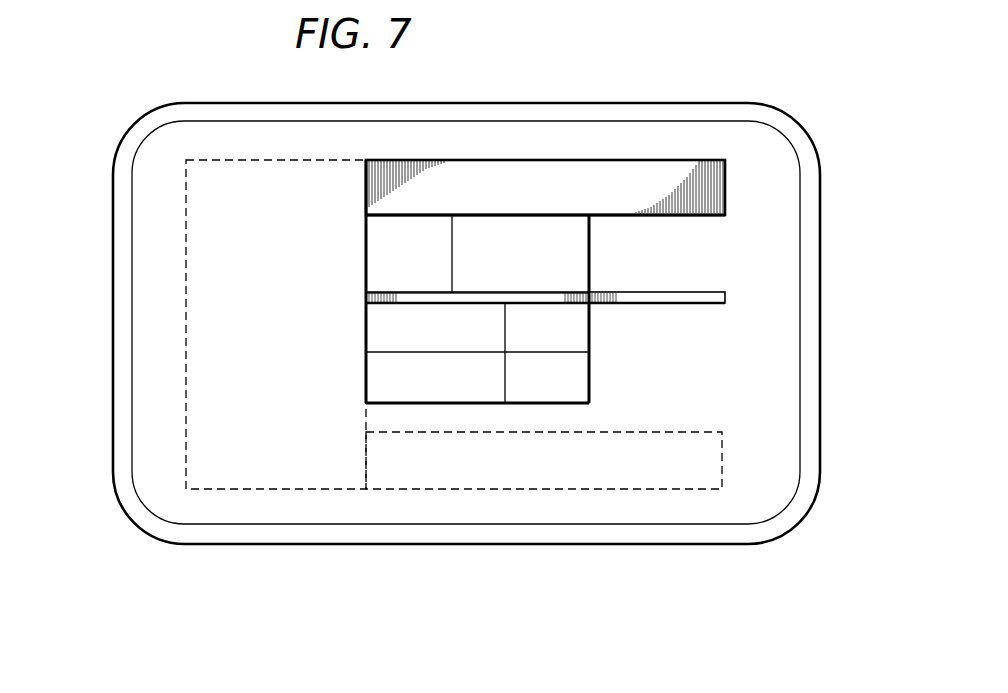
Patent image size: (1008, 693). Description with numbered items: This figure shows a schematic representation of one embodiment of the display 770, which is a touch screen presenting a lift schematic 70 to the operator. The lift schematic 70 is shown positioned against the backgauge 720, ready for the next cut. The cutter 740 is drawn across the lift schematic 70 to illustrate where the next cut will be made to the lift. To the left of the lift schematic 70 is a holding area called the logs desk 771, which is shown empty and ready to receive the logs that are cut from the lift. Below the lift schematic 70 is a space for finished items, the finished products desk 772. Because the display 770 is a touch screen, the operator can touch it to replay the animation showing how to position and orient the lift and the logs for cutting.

The display 770 is at (240, 83).
The logs desk 771 is at (186, 201).
The finished products desk 772 is at (642, 478).
The backgauge 720 is at (625, 175).
The cutter 740 is at (725, 297).
The lift schematic 70 is at (464, 394).